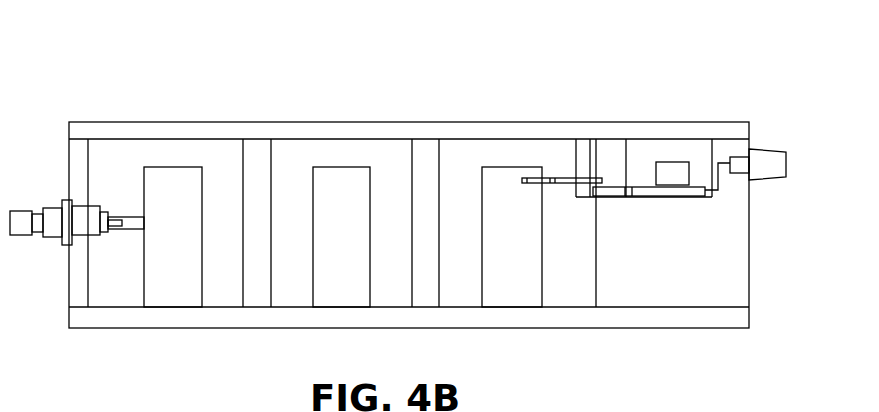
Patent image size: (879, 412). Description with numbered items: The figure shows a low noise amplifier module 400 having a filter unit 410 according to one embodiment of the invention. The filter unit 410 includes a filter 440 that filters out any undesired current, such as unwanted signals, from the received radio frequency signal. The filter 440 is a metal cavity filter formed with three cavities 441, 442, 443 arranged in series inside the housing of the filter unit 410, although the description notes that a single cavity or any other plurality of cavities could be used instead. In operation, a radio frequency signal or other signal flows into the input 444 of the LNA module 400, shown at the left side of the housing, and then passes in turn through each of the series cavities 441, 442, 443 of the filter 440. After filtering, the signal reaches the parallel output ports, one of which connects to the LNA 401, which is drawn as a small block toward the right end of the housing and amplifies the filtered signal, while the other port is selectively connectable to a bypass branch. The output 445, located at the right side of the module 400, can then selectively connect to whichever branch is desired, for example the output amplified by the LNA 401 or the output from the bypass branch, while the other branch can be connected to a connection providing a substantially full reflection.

The low noise amplifier module 400 is at (97, 47).
The filter unit 410 is at (175, 338).
The filter 440 is at (560, 108).
The cavity 441 is at (237, 167).
The cavity 442 is at (407, 167).
The cavity 443 is at (573, 167).
The input 444 is at (12, 237).
The output 445 is at (753, 146).
The LNA 401 is at (662, 170).